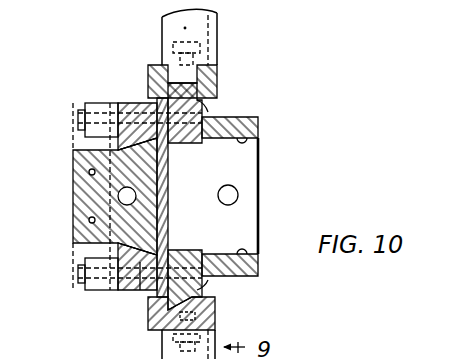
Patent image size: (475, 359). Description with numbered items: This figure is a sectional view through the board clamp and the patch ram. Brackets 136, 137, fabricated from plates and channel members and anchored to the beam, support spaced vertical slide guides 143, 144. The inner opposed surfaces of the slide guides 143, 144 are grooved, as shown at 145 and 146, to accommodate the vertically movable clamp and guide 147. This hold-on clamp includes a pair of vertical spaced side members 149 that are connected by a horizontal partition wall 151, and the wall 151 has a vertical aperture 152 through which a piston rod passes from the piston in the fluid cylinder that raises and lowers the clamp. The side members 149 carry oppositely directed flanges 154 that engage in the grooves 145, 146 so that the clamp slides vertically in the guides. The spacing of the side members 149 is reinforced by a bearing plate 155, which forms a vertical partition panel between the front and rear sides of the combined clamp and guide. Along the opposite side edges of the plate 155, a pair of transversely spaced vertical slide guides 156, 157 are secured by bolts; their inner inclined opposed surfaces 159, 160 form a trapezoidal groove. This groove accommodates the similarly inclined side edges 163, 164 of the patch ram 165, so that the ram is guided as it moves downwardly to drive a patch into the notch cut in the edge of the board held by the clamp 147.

The bracket 136 is at (222, 25).
The bracket 137 is at (160, 354).
The vertical slide guide 143 is at (207, 70).
The vertical slide guide 144 is at (215, 322).
The groove 145 is at (197, 87).
The groove 146 is at (185, 297).
The vertically movable clamp and guide 147 is at (127, 293).
The vertical spaced side members 149 is at (247, 134).
The horizontal partition wall 151 is at (247, 172).
The vertical aperture 152 is at (238, 196).
The oppositely directed flanges 154 is at (200, 99).
The bearing plate 155 is at (163, 187).
The vertical slide guide 156 is at (133, 108).
The vertical slide guide 157 is at (145, 282).
The inclined opposed surface 159 is at (157, 157).
The inclined opposed surface 160 is at (127, 250).
The inclined side edge 163 is at (163, 150).
The inclined side edge 164 is at (150, 243).
The patch ram 165 is at (72, 202).